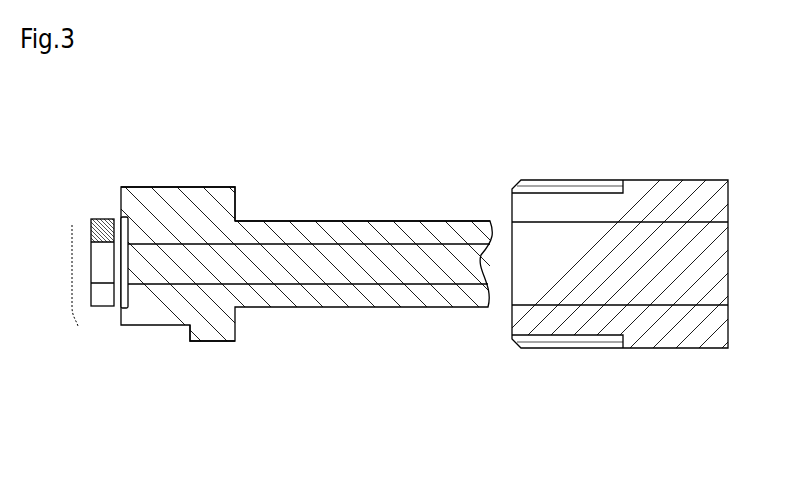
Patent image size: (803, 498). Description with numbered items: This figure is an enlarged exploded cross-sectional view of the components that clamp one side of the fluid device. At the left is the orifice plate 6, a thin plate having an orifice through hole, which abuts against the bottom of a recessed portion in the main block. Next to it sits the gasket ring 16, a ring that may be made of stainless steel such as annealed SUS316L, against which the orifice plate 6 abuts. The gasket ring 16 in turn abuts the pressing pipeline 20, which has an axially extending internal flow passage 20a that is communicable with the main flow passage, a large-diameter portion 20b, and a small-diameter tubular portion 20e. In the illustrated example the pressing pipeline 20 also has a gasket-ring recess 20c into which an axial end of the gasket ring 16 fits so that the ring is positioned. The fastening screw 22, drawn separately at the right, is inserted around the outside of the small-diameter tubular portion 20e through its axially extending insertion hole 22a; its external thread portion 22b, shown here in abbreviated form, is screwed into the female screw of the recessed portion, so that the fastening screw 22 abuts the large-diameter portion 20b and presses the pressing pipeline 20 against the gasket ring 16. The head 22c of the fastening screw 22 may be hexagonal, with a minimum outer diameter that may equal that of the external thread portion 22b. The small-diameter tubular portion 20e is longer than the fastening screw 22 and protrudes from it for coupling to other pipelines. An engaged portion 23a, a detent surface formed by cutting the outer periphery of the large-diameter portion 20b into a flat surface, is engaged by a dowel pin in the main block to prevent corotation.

The orifice plate 6 is at (70, 293).
The gasket ring 16 is at (97, 218).
The pressing pipeline 20 is at (305, 198).
The internal flow passage 20a is at (300, 284).
The large-diameter portion 20b is at (238, 198).
The gasket-ring recess 20c is at (122, 306).
The small-diameter tubular portion 20e is at (380, 220).
The fastening screw 22 is at (616, 164).
The insertion hole 22a is at (637, 305).
The external thread portion 22b is at (560, 352).
The head 22c is at (668, 180).
The engaged portion 23a is at (170, 330).